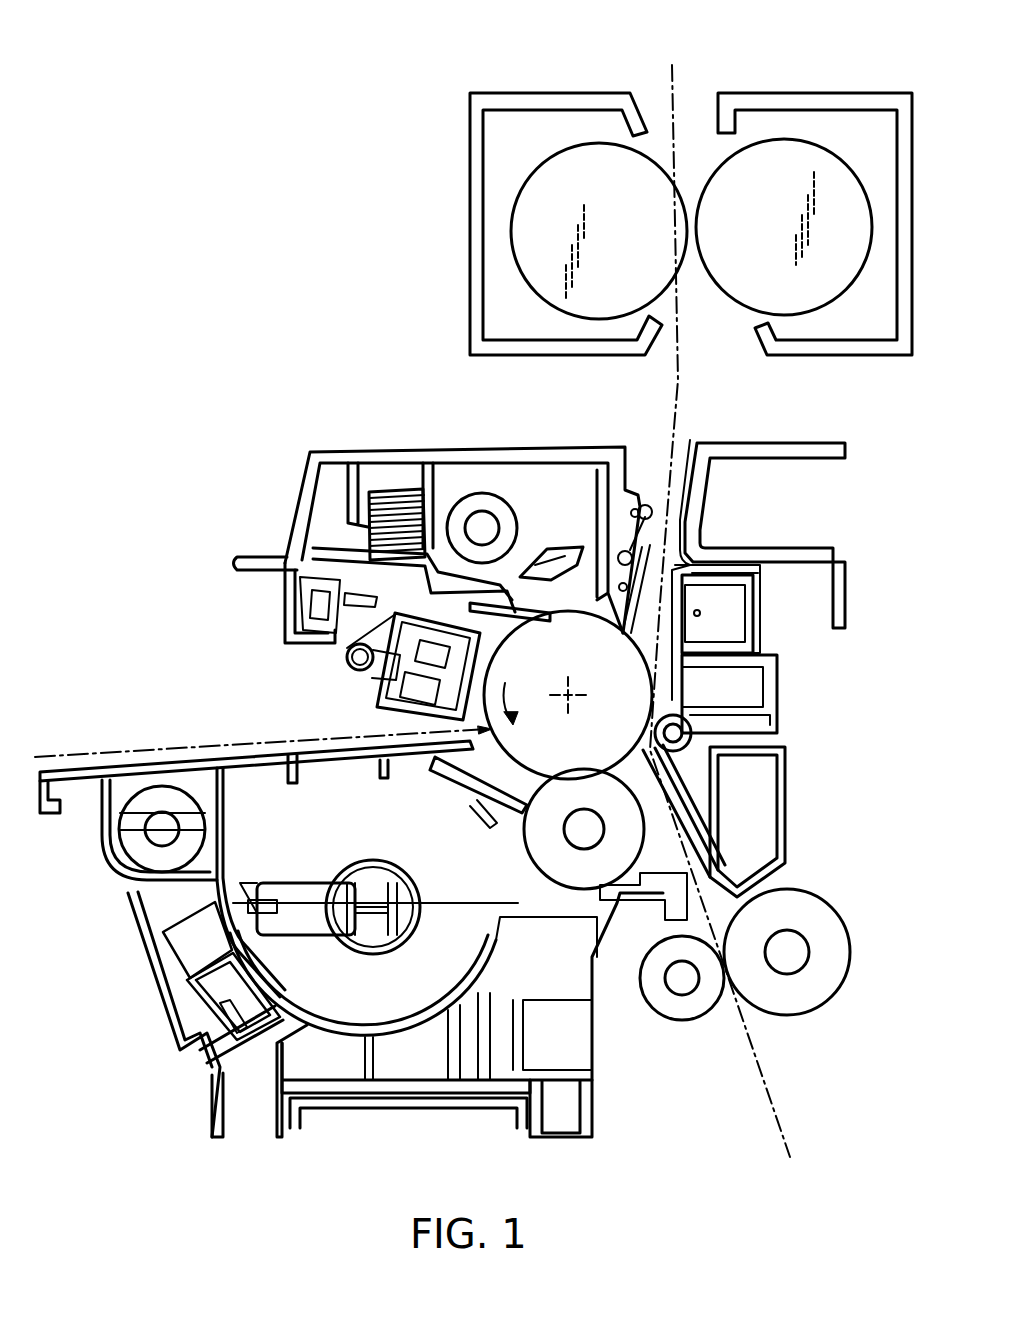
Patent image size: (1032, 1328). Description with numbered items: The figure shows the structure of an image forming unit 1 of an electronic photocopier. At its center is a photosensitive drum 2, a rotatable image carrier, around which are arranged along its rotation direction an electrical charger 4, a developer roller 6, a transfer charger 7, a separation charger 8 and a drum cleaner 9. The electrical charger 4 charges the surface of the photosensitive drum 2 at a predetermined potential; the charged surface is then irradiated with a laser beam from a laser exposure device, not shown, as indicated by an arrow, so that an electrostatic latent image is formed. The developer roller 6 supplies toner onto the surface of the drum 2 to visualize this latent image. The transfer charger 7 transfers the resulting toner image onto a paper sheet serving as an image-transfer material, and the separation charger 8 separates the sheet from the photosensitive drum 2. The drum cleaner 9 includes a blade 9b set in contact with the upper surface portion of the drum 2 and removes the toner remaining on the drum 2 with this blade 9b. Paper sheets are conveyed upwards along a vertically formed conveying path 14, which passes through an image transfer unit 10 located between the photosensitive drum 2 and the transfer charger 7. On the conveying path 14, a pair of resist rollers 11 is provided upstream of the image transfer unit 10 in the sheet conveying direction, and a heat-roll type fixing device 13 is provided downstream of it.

The image forming unit 1 is at (388, 383).
The photosensitive drum 2 is at (527, 743).
The electrical charger 4 is at (373, 690).
The developer roller 6 is at (542, 847).
The transfer charger 7 is at (750, 687).
The separation charger 8 is at (738, 613).
The drum cleaner 9 is at (500, 603).
The blade 9b is at (530, 598).
The image transfer unit 10 is at (783, 745).
The resist rollers 11 is at (827, 923).
The fixing device 13 is at (816, 122).
The conveying path 14 is at (770, 1072).